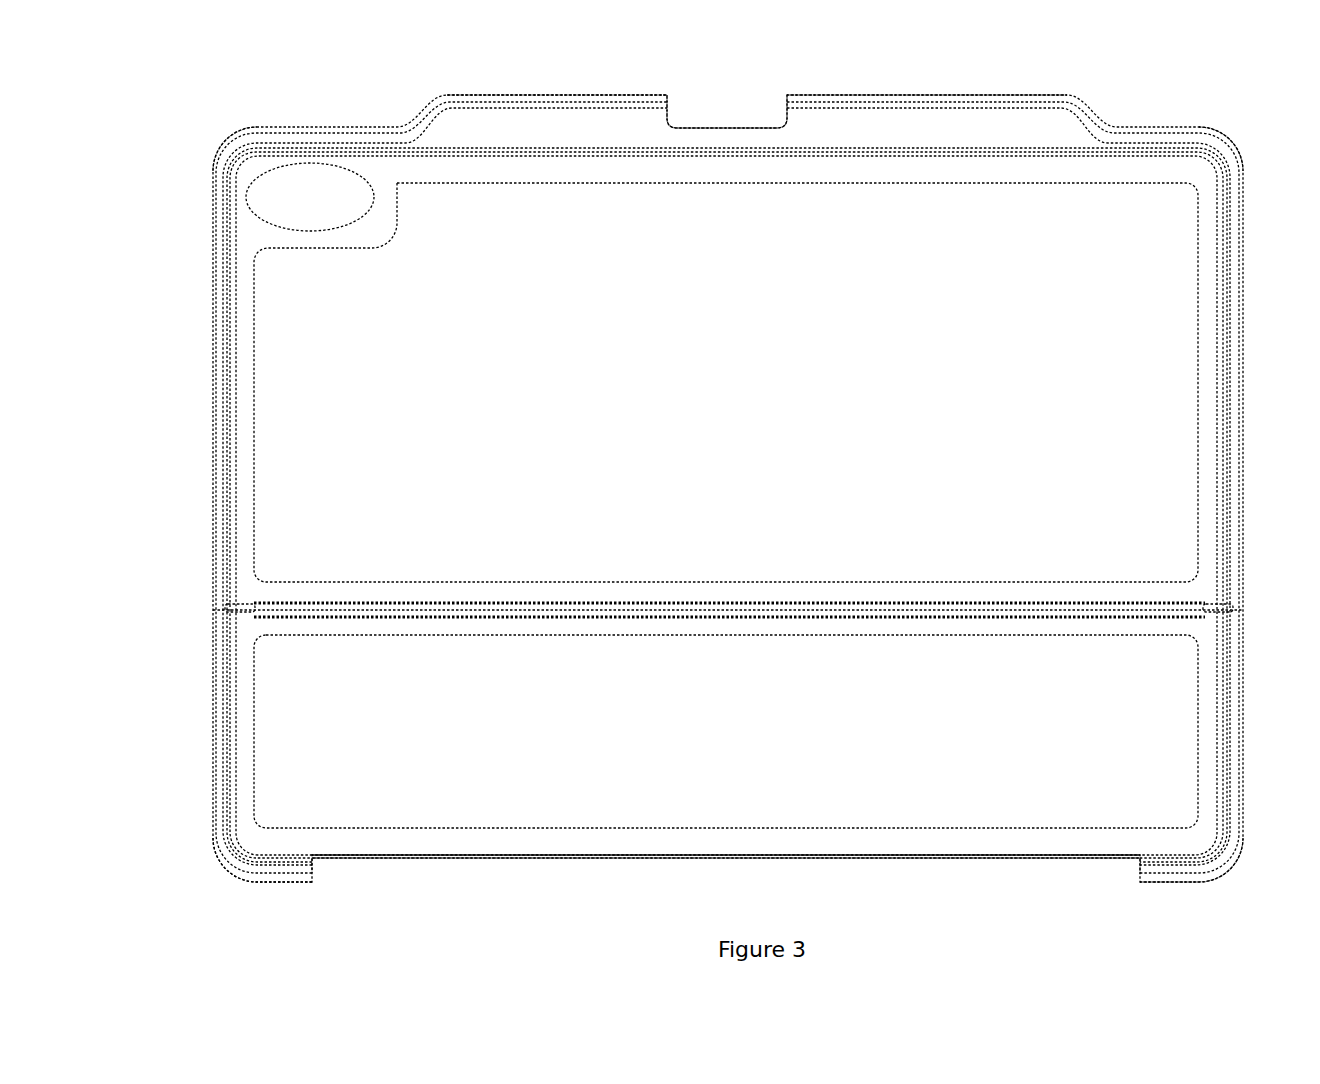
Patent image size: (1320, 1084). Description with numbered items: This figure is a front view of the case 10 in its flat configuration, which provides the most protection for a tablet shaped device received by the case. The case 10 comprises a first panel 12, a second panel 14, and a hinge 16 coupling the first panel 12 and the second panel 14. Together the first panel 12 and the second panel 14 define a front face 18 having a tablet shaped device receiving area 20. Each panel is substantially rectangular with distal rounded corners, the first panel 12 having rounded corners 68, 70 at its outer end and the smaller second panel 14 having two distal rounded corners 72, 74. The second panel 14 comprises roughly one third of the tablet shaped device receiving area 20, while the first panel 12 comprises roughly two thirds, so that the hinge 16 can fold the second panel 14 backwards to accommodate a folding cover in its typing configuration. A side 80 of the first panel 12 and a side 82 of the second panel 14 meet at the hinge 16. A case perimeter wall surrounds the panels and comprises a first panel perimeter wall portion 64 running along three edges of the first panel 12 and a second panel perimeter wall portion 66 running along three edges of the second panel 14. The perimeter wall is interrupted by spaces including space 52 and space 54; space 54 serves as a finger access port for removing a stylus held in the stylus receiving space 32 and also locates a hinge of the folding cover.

The case 10 is at (178, 138).
The first panel 12 is at (222, 330).
The second panel 14 is at (1215, 718).
The hinge 16 is at (265, 607).
The front face 18 is at (1122, 683).
The tablet shaped device receiving area 20 is at (726, 382).
The stylus receiving space 32 is at (535, 124).
The space 52 is at (355, 888).
The space 54 is at (735, 110).
The first panel perimeter wall portion 64 is at (210, 435).
The second panel perimeter wall portion 66 is at (1240, 668).
The rounded corner 68 is at (215, 132).
The rounded corner 70 is at (1228, 113).
The rounded corner 72 is at (1235, 898).
The rounded corner 74 is at (220, 888).
The side of the first panel 80 is at (568, 590).
The side of the second panel 82 is at (483, 625).